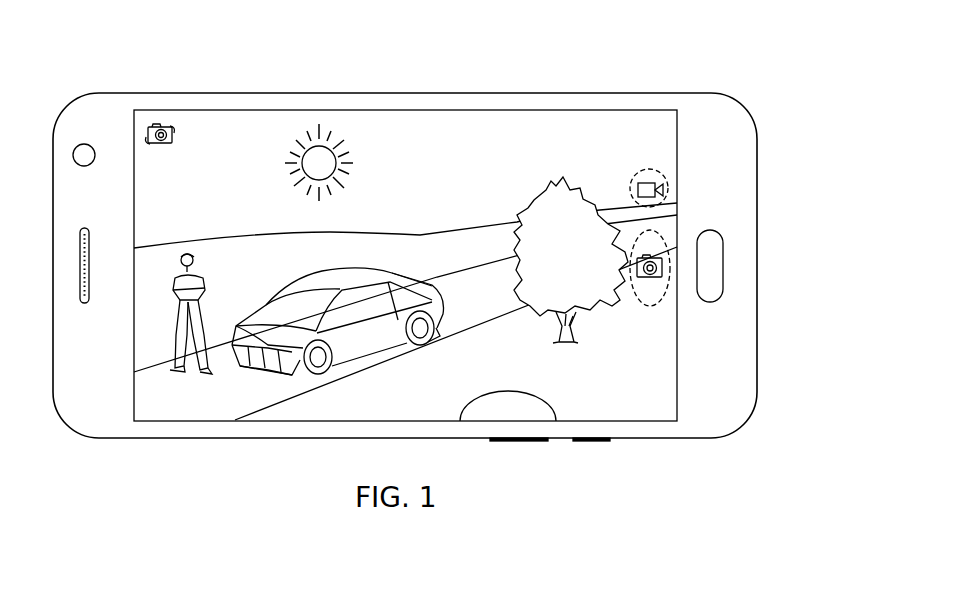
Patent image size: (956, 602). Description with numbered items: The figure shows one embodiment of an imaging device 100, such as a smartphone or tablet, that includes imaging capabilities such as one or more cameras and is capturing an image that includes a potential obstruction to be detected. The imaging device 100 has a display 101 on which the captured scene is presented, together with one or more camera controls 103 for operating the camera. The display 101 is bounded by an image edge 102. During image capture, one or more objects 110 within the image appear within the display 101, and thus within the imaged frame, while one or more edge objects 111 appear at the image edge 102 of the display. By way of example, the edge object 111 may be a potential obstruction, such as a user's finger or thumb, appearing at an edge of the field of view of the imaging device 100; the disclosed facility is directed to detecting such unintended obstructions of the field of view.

The imaging device 100 is at (656, 92).
The display 101 is at (658, 143).
The image edge 102 is at (677, 328).
The camera controls 103 is at (658, 234).
The objects 110 is at (210, 129).
The edge objects 111 is at (513, 410).